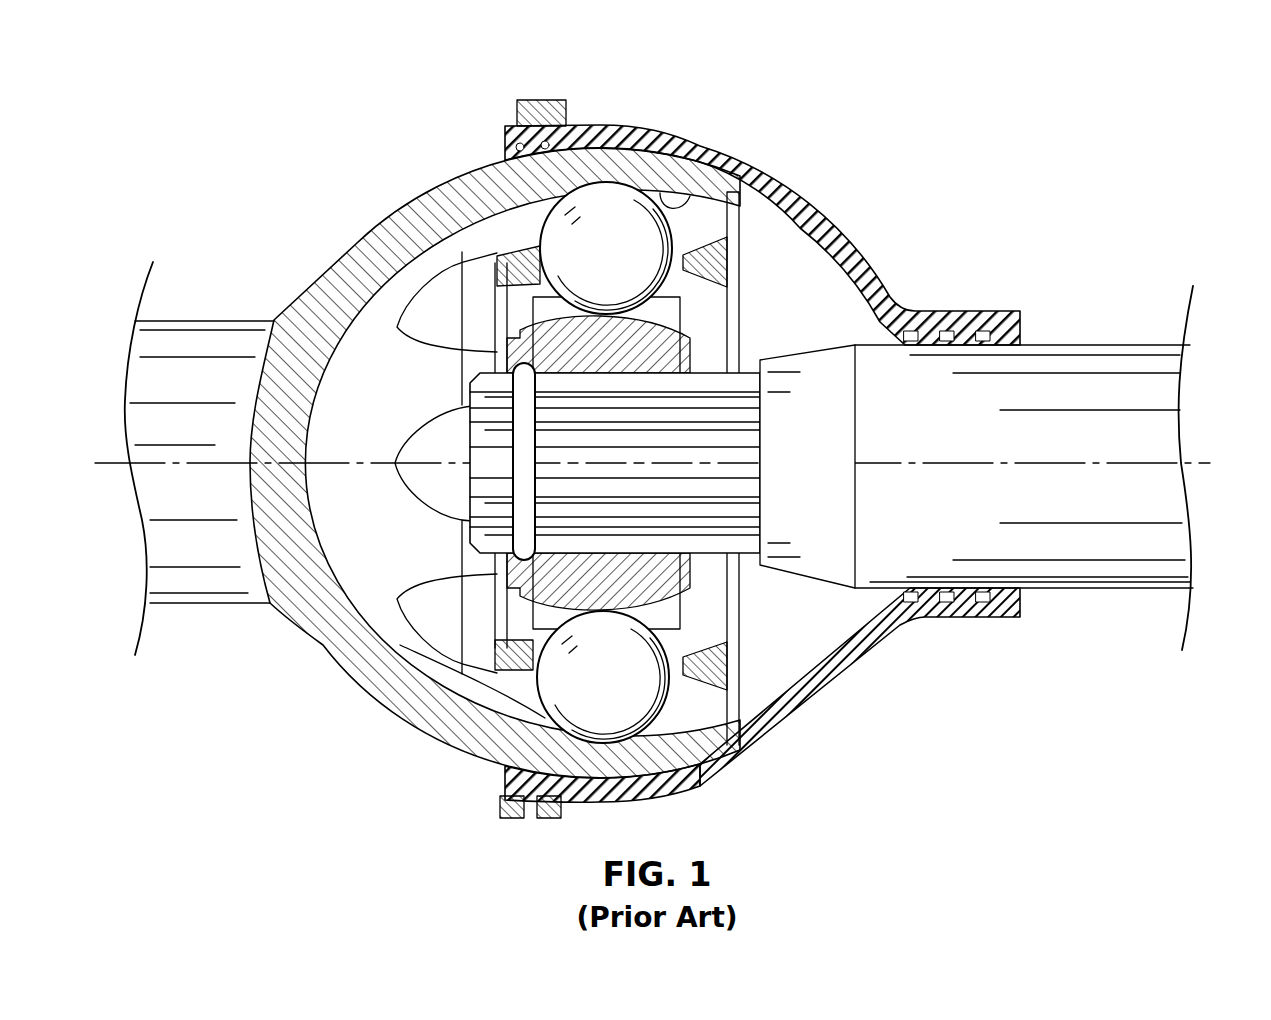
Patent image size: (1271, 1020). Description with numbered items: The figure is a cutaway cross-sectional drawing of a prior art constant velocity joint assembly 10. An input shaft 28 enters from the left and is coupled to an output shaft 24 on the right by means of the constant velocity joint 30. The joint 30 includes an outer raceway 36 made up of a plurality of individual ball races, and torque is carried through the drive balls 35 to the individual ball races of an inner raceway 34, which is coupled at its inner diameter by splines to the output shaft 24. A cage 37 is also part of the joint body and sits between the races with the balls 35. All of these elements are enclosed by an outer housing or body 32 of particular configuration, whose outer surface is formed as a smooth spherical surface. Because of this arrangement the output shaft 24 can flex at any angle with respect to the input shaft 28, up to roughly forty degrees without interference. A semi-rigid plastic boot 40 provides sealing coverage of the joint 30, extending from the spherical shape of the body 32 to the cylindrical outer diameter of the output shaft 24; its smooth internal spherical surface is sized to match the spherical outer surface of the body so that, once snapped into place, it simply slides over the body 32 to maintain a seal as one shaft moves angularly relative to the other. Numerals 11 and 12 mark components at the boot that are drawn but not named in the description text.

The constant velocity joint assembly 10 is at (1050, 74).
The boot 11 is at (548, 793).
The clamp 12 is at (503, 795).
The output shaft 24 is at (1045, 368).
The input shaft 28 is at (205, 343).
The constant velocity joint 30 is at (472, 424).
The outer housing or body 32 is at (432, 200).
The inner raceway 34 is at (630, 580).
The drive balls 35 is at (611, 232).
The outer raceway 36 is at (688, 194).
The cage 37 is at (511, 653).
The semi-rigid boot 40 is at (858, 662).